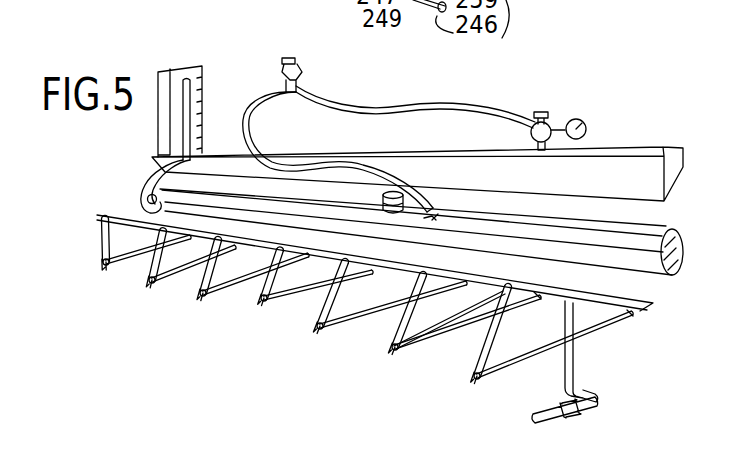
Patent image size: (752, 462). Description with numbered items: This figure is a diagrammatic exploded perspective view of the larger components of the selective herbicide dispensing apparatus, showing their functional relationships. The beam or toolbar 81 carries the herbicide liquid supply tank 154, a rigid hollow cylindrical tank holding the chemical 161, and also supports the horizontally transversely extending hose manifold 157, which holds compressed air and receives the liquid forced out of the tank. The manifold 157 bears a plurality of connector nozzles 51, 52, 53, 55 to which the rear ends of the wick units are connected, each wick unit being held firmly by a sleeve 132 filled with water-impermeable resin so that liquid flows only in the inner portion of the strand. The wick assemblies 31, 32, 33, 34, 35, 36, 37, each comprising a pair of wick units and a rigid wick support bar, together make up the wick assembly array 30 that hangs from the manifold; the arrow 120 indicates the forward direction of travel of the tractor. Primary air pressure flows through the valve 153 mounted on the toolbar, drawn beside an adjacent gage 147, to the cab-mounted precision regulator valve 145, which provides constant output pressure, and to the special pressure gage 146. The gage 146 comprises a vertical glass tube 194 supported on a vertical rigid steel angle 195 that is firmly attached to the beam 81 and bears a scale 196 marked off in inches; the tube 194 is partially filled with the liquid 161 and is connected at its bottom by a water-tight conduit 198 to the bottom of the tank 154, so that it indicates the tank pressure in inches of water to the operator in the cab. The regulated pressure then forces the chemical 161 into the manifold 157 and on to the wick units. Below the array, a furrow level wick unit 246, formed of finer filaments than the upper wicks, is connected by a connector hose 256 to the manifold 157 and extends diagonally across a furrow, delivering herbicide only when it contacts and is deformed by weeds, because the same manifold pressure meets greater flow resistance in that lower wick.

The pressure gage 146 is at (242, 42).
The vertical glass tube 194 is at (183, 90).
The vertical rigid steel angle 195 is at (201, 103).
The scale 196 is at (206, 105).
The water-tight conduit 198 is at (143, 187).
The precision regulator valve 145 is at (299, 87).
The valve 153 is at (545, 113).
The pressure gauge 147 is at (587, 128).
The beam 81 is at (657, 147).
The herbicide liquid supply tank 154 is at (649, 216).
The chemical 161 is at (684, 251).
The hose manifold 157 is at (101, 232).
The wick assembly 37 is at (113, 270).
The wick assembly 36 is at (170, 275).
The wick assembly 35 is at (213, 297).
The wick assembly 34 is at (298, 326).
The wick assembly 33 is at (330, 323).
The wick assembly 32 is at (400, 345).
The wick assembly 31 is at (481, 378).
The forward direction of travel 120 is at (187, 345).
The wick assembly array 30 is at (512, 406).
The connector nozzle 52 is at (411, 318).
The connector nozzle 53 is at (484, 316).
The connector nozzle 55 is at (528, 300).
The connector nozzle 51 is at (634, 318).
The sleeve 132 is at (499, 371).
The connector hose 256 is at (576, 367).
The furrow level wick unit 246 is at (556, 405).